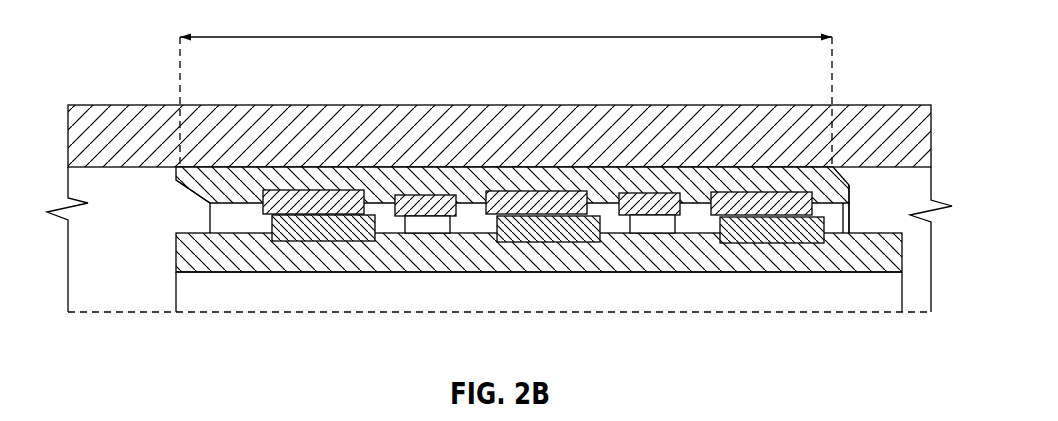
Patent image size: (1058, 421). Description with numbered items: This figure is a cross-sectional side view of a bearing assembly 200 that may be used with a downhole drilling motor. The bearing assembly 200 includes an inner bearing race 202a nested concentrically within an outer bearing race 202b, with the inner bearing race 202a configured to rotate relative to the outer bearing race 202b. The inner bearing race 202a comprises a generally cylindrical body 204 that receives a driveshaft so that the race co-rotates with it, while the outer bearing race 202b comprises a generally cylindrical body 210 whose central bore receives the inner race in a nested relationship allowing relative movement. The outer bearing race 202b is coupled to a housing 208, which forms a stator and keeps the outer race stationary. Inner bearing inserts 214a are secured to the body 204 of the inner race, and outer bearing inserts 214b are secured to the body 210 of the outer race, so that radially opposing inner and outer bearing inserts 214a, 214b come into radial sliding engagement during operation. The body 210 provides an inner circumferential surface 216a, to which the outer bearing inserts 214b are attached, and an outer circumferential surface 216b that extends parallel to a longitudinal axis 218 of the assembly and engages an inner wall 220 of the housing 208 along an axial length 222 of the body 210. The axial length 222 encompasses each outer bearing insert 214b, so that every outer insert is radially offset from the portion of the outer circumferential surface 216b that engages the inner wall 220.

The bearing assembly 200 is at (141, 64).
The inner bearing race 202a is at (283, 282).
The outer bearing race 202b is at (262, 160).
The body 204 is at (218, 272).
The housing 208 is at (845, 117).
The body 210 is at (180, 180).
The inner bearing inserts 214a is at (345, 235).
The outer bearing inserts 214b is at (418, 203).
The inner circumferential surface 216a is at (467, 202).
The outer circumferential surface 216b is at (415, 203).
The longitudinal axis 218 is at (400, 313).
The inner wall 220 is at (913, 168).
The axial length 222 is at (527, 36).